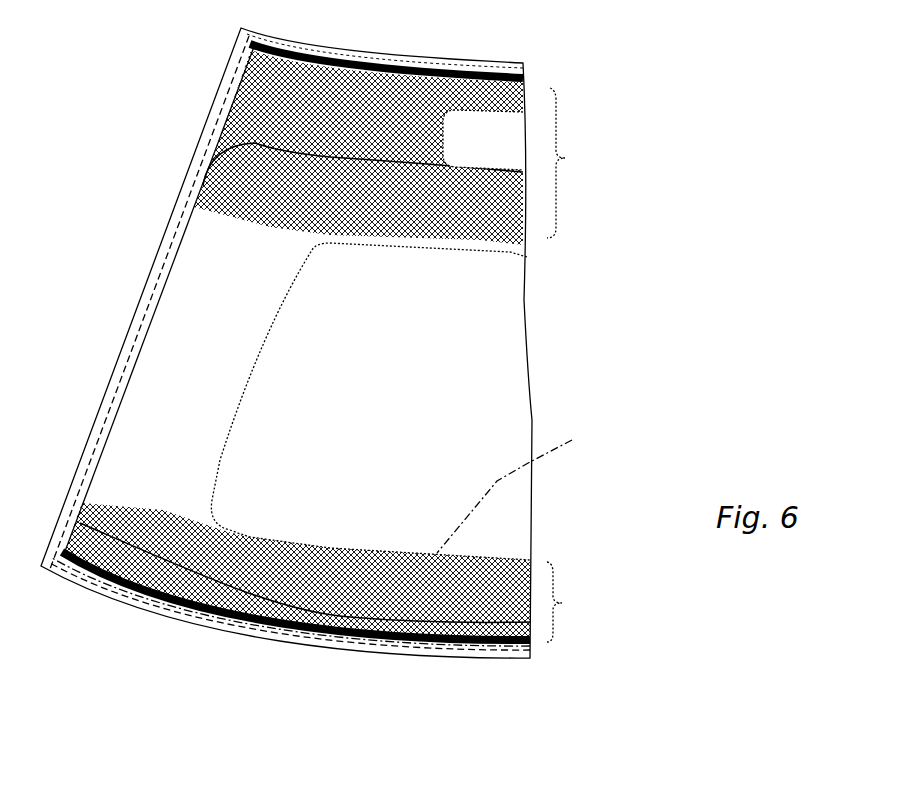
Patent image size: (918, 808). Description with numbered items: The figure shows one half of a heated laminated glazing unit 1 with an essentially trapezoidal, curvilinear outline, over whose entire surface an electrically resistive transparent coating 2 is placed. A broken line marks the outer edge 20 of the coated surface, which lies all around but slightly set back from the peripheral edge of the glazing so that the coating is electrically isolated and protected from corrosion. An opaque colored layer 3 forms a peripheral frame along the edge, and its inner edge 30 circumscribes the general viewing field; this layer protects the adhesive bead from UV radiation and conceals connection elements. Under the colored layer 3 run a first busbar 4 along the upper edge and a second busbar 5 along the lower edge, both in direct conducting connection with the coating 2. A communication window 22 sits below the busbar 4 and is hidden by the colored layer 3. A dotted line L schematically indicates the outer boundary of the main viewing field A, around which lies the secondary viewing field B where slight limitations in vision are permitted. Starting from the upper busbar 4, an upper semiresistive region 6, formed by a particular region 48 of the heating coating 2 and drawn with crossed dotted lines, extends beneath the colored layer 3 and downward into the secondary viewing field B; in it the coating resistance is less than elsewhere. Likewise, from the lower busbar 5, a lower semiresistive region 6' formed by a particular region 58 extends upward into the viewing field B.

The heated laminated glazing unit 1 is at (160, 88).
The electrically resistive transparent coating 2 is at (413, 398).
The opaque colored layer 3 is at (523, 95).
The first busbar 4 is at (525, 73).
The second busbar 5 is at (533, 658).
The upper semiresistive region 6 is at (573, 163).
The lower semiresistive region 6' is at (337, 572).
The outer edge of the coated surface 20 is at (175, 232).
The communication window 22 is at (500, 115).
The inner edge of the colored layer 30 is at (523, 173).
The particular region of the heating coating 48 is at (527, 257).
The particular region of the heating coating 58 is at (162, 604).
The dotted line L is at (516, 490).
The main viewing field A is at (315, 453).
The secondary viewing field B is at (184, 453).